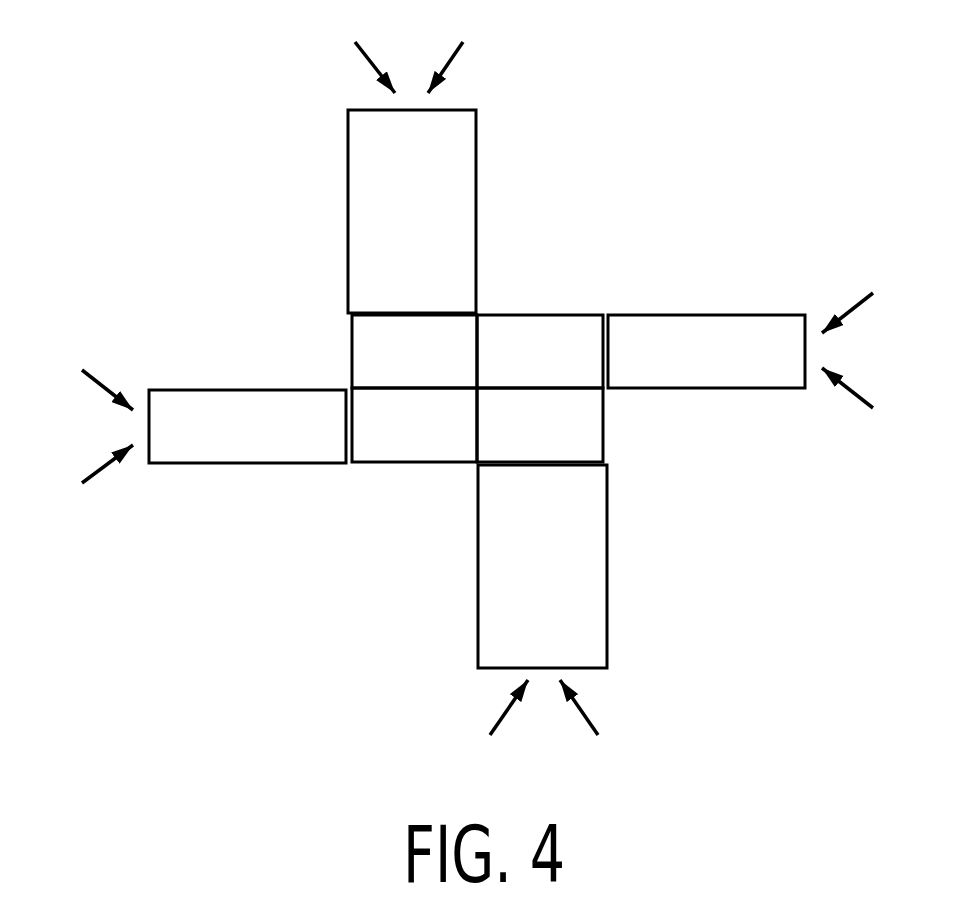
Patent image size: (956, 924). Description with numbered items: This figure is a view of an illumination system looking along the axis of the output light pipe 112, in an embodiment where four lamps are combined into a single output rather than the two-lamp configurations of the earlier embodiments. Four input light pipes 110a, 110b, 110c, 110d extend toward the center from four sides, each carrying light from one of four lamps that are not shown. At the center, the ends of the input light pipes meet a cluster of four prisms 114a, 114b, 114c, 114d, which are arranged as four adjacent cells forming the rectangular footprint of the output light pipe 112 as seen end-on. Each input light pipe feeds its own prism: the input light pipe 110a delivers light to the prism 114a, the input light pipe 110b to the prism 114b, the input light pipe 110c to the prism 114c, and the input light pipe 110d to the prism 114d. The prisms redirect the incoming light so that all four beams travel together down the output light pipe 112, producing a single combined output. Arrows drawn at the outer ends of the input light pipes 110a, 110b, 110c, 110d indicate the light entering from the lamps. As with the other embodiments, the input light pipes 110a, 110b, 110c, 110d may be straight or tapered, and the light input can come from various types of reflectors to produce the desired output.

The input light pipe 110a is at (227, 390).
The input light pipe 110b is at (607, 578).
The input light pipe 110c is at (702, 315).
The input light pipe 110d is at (476, 175).
The output light pipe 112 is at (475, 362).
The prism 114a is at (418, 465).
The prism 114b is at (602, 413).
The prism 114c is at (488, 313).
The prism 114d is at (347, 348).